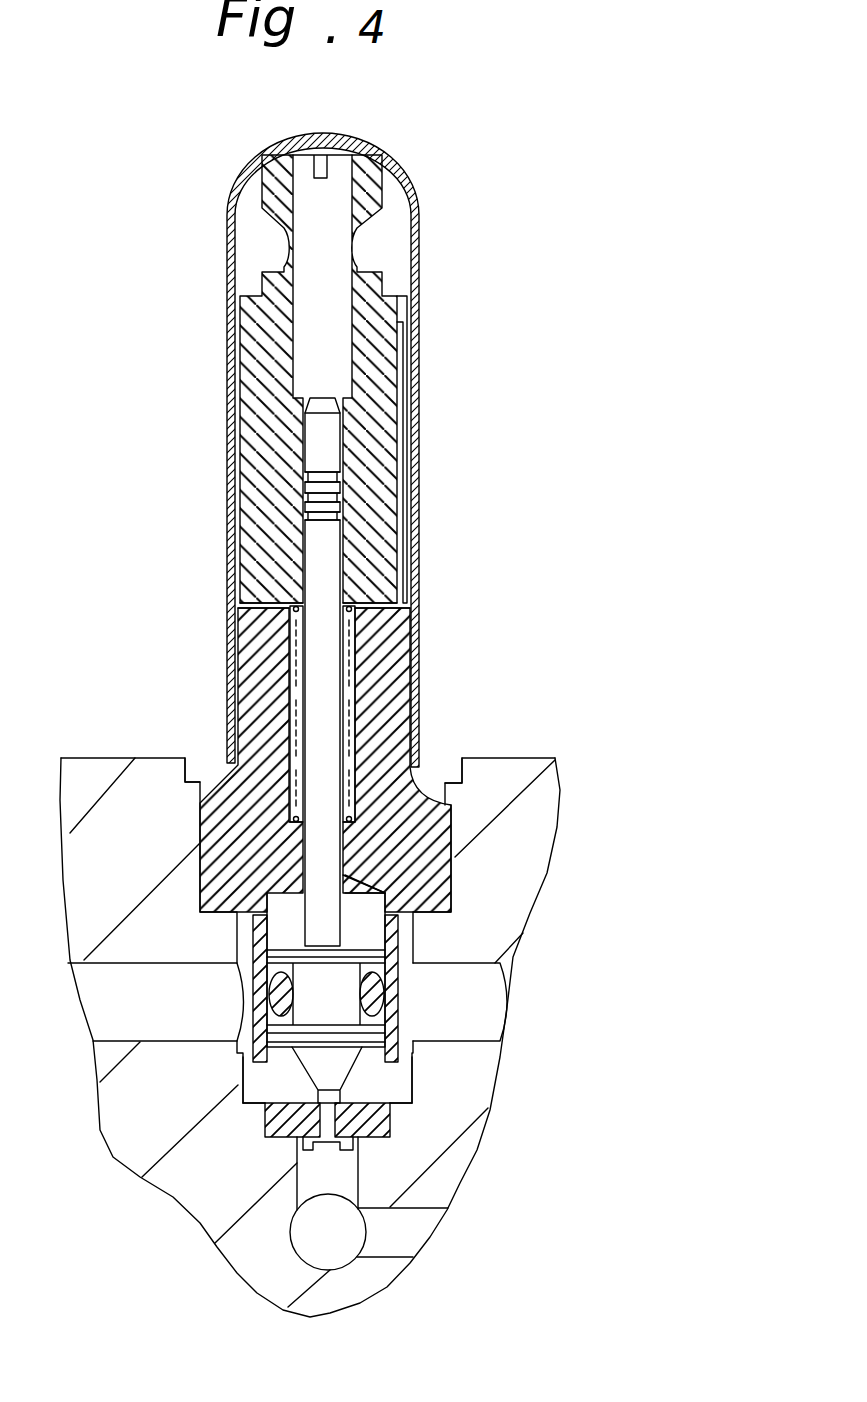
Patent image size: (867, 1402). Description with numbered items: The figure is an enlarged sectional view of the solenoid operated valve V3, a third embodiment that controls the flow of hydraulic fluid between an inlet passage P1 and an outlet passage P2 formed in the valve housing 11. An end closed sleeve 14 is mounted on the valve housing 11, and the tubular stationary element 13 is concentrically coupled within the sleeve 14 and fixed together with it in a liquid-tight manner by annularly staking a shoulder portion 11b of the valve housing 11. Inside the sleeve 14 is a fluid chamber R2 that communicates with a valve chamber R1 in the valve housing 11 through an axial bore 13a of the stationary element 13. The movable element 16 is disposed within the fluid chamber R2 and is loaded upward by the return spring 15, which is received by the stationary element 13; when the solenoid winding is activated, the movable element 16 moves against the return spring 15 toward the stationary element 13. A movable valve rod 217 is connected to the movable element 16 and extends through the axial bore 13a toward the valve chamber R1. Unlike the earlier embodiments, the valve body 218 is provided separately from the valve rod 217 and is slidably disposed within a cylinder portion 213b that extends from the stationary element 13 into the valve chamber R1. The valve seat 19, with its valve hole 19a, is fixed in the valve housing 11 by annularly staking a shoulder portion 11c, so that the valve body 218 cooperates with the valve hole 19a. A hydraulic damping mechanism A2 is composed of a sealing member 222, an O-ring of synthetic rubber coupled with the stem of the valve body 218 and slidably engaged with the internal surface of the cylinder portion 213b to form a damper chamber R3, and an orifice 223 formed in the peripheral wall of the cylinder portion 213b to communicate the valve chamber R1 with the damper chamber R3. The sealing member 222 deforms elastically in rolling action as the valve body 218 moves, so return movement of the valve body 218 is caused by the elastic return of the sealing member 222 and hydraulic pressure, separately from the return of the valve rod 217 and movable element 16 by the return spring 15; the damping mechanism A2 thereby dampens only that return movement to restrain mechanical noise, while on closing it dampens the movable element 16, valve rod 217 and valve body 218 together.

The end closed sleeve 14 is at (236, 214).
The movable element 16 is at (258, 441).
The movable valve rod 217 is at (330, 706).
The tubular stationary element 13 is at (258, 668).
The axial bore 13a is at (340, 856).
The return spring 15 is at (352, 614).
The fluid chamber R2 is at (404, 618).
The valve housing 11 is at (78, 800).
The shoulder portion 11b is at (203, 784).
The shoulder portion 11c is at (400, 1100).
The damper chamber R3 is at (287, 900).
The hydraulic damping mechanism A2 is at (362, 914).
The orifice 223 is at (256, 931).
The cylinder portion 213b is at (392, 950).
The sealing member 222 is at (385, 995).
The outlet passage P2 is at (110, 999).
The valve body 218 is at (318, 1070).
The valve chamber R1 is at (397, 1079).
The valve seat 19 is at (392, 1127).
The valve hole 19a is at (303, 1140).
The inlet passage P1 is at (420, 1235).
The solenoid operated valve V3 is at (434, 383).